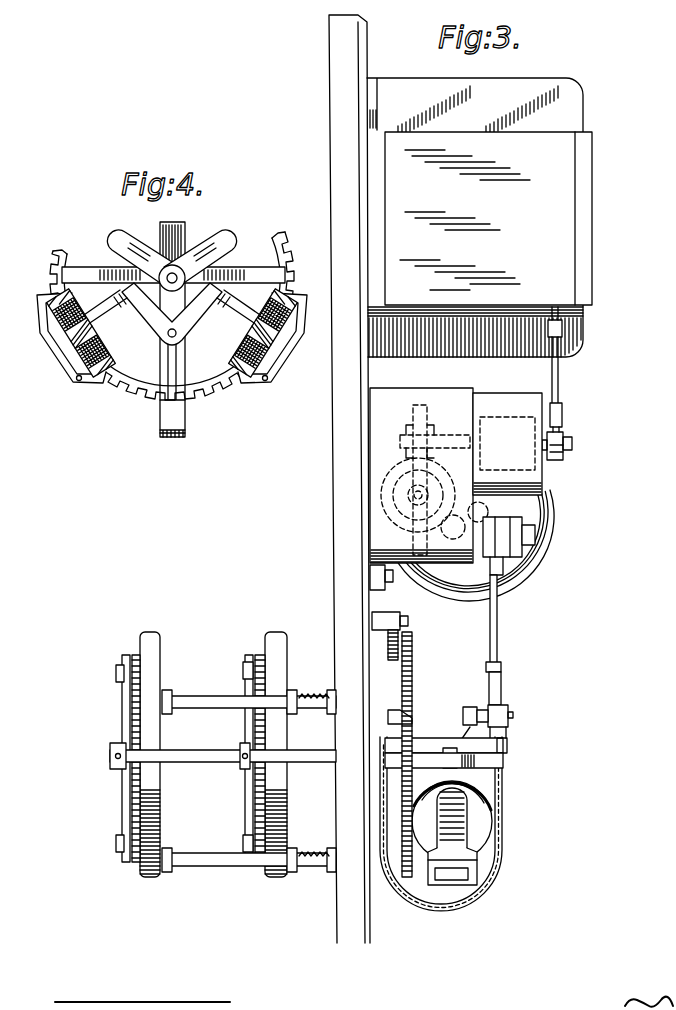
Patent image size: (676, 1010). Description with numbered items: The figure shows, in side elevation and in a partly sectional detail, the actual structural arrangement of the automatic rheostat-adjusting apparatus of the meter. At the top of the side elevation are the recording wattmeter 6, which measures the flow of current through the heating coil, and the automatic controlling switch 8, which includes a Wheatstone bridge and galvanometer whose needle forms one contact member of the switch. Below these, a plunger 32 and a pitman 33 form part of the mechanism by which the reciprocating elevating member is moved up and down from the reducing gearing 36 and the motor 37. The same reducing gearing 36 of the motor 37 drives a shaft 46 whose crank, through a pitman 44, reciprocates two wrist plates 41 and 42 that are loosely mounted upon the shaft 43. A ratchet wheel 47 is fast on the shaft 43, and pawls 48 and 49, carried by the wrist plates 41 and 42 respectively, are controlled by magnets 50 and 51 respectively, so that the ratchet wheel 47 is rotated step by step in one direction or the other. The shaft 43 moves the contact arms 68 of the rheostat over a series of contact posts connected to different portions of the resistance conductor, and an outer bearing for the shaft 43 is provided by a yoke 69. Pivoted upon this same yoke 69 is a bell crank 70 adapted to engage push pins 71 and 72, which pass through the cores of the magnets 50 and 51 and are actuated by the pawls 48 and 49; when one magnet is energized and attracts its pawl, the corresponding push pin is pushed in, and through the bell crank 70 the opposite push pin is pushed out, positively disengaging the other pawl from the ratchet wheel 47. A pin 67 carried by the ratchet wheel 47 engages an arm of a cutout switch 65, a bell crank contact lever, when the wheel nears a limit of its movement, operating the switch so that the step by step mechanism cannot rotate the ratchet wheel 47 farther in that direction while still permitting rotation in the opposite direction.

In FIG. 3, the recording wattmeter 6 is at (572, 107).
In FIG. 3, the automatic controlling switch 8 is at (571, 265).
In FIG. 3, the plunger 32 is at (591, 312).
In FIG. 3, the pitman 33 is at (559, 372).
In FIG. 3, the reducing gearing 36 is at (400, 467).
In FIG. 3, the motor 37 is at (549, 514).
In FIG. 3, the shaft 46 is at (539, 528).
In FIG. 3, the pitman 44 is at (498, 617).
In FIG. 3, the cutout switch 65 is at (390, 651).
In FIG. 3, the ratchet wheel 47 is at (414, 686).
In FIG. 4, the ratchet wheel 47 is at (192, 384).
In FIG. 3, the pin 67 is at (418, 727).
In FIG. 3, the bell crank 70 is at (462, 752).
In FIG. 4, the bell crank 70 is at (157, 320).
In FIG. 3, the push pin 71 is at (472, 766).
In FIG. 4, the push pin 71 is at (76, 360).
In FIG. 4, the push pin 72 is at (262, 365).
In FIG. 3, the yoke 69 is at (502, 816).
In FIG. 4, the yoke 69 is at (173, 440).
In FIG. 3, the magnet 50 is at (481, 832).
In FIG. 4, the magnet 50 is at (93, 365).
In FIG. 3, the pawl 48 is at (468, 856).
In FIG. 4, the pawl 48 is at (57, 352).
In FIG. 4, the pawl 49 is at (290, 357).
In FIG. 3, the contact arms 68 is at (122, 708).
In FIG. 3, the shaft 43 is at (209, 762).
In FIG. 4, the shaft 43 is at (168, 273).
In FIG. 4, the wrist plate 41 is at (147, 267).
In FIG. 4, the wrist plate 42 is at (212, 247).
In FIG. 4, the magnet 51 is at (290, 272).